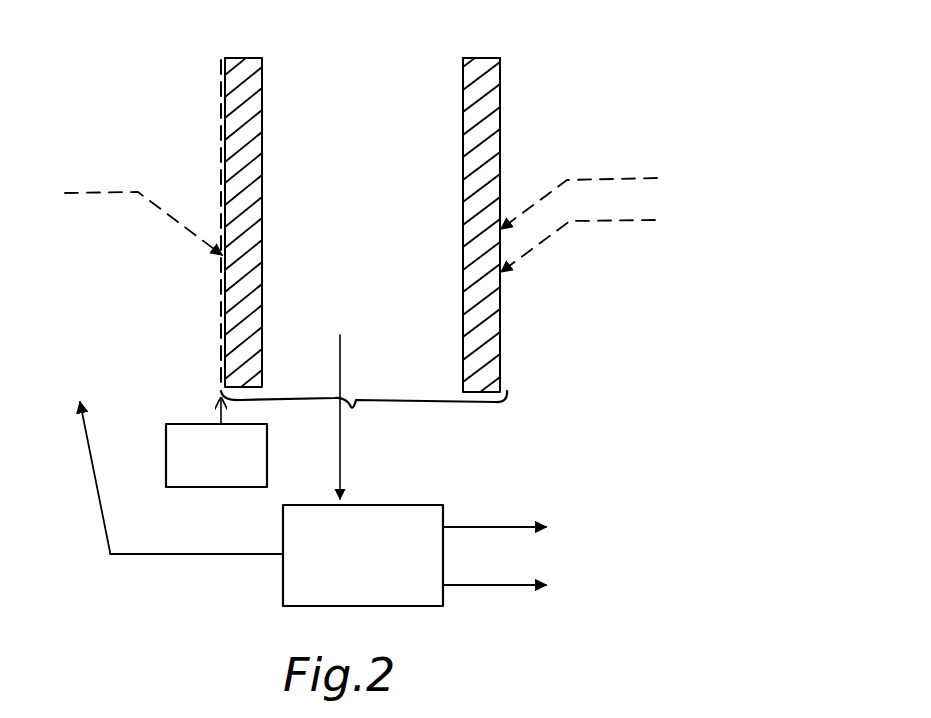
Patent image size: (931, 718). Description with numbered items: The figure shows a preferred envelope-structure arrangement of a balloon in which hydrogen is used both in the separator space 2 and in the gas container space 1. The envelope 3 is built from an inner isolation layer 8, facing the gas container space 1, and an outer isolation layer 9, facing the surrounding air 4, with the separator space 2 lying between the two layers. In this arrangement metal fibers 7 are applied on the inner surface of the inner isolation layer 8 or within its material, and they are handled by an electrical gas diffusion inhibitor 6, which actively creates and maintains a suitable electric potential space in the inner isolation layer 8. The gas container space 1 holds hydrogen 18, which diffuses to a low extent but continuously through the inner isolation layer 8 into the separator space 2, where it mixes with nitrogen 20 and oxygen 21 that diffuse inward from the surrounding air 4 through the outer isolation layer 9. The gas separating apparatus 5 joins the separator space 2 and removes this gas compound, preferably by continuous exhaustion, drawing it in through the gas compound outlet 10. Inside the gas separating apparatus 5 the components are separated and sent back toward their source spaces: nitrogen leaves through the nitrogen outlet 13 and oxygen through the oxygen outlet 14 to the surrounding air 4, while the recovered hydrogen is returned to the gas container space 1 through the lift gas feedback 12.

The gas container space 1 is at (106, 137).
The separator space 2 is at (367, 142).
The envelope 3 is at (606, 143).
The surrounding air 4 is at (364, 418).
The gas separating apparatus 5 is at (363, 555).
The electrical gas diffusion inhibitor 6 is at (216, 442).
The metal fibers 7 is at (223, 306).
The inner isolation layer 8 is at (226, 352).
The outer isolation layer 9 is at (501, 337).
The gas compound outlet 10 is at (360, 377).
The lift gas feedback 12 is at (172, 462).
The nitrogen outlet 13 is at (516, 522).
The oxygen outlet 14 is at (516, 581).
The hydrogen 18 is at (127, 210).
The nitrogen 20 is at (598, 189).
The oxygen 21 is at (598, 233).